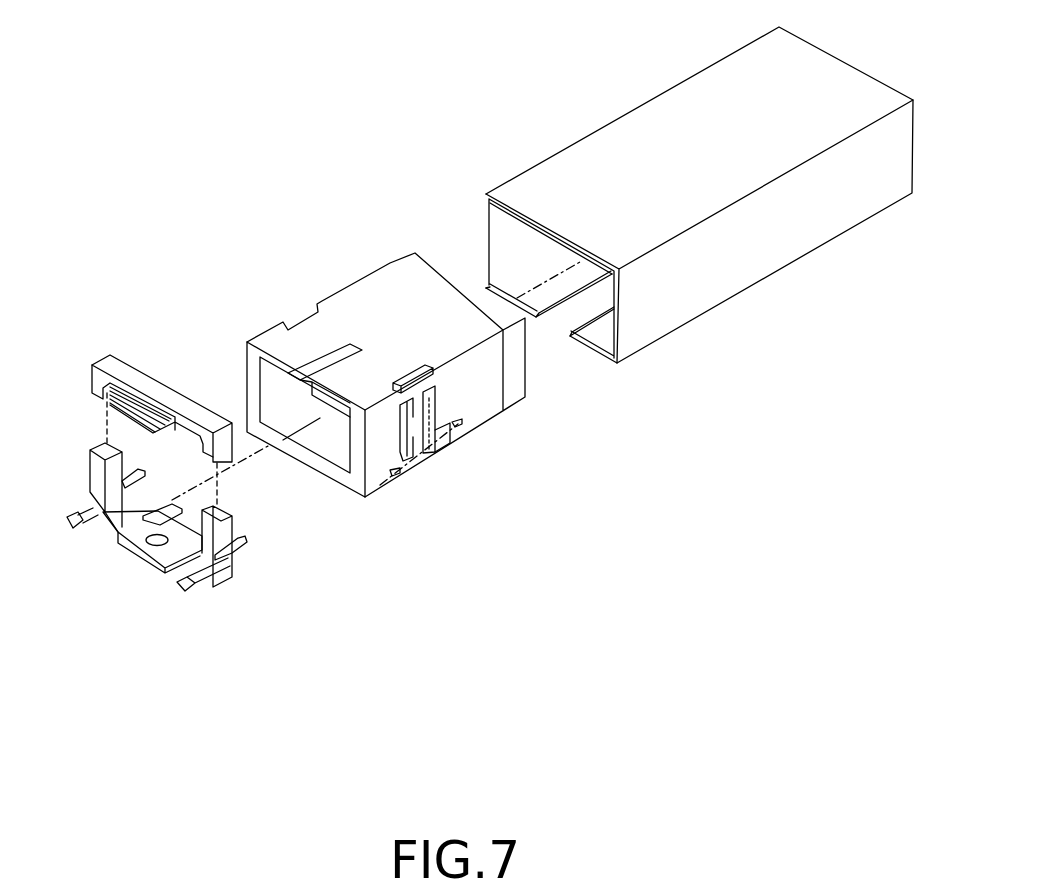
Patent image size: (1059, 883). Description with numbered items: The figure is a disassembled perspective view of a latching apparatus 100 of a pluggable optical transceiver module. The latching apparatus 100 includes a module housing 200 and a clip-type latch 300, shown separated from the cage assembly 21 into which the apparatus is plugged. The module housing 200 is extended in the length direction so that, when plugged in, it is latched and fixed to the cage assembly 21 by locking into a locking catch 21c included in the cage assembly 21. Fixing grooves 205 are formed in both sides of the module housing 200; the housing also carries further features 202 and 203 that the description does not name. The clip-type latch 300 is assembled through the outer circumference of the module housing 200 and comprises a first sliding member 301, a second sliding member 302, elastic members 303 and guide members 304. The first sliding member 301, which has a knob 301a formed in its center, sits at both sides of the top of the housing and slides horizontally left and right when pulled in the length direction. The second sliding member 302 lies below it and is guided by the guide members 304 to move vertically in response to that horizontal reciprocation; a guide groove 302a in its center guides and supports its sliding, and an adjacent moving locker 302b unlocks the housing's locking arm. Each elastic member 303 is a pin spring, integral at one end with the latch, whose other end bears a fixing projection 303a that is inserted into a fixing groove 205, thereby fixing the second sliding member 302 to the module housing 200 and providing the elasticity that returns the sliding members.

The latching apparatus 100 is at (402, 79).
The cage assembly 21 is at (699, 199).
The locking catch 21c is at (580, 306).
The module housing 200 is at (438, 375).
The guide rail 202 is at (433, 377).
The latch 203 is at (430, 403).
The fixing groove 205 is at (395, 474).
The clip-type latch 300 is at (206, 501).
The first sliding member 301 is at (180, 439).
The knob 301a is at (110, 404).
The second sliding member 302 is at (179, 569).
The guide groove 302a is at (127, 528).
The moving locker 302b is at (132, 532).
The elastic member 303 is at (173, 578).
The fixing projection 303a is at (69, 523).
The guide member 304 is at (223, 463).